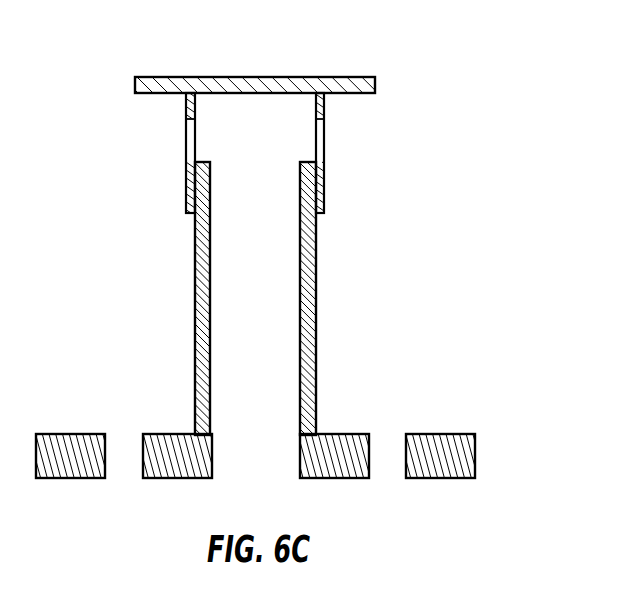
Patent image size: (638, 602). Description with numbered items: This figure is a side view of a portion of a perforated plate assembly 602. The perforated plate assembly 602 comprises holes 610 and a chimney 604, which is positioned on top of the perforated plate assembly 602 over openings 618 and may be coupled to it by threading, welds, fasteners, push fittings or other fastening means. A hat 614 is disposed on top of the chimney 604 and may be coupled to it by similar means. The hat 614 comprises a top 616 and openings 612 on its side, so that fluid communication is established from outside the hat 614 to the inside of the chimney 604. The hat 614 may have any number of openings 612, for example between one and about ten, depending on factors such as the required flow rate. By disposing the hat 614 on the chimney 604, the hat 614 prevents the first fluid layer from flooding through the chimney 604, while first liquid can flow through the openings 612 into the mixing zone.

The perforated plate assembly 602 is at (255, 420).
The chimney 604 is at (317, 297).
The holes 610 is at (386, 440).
The openings 612 is at (322, 140).
The hat 614 is at (269, 120).
The top 616 is at (217, 77).
The openings 618 is at (212, 458).